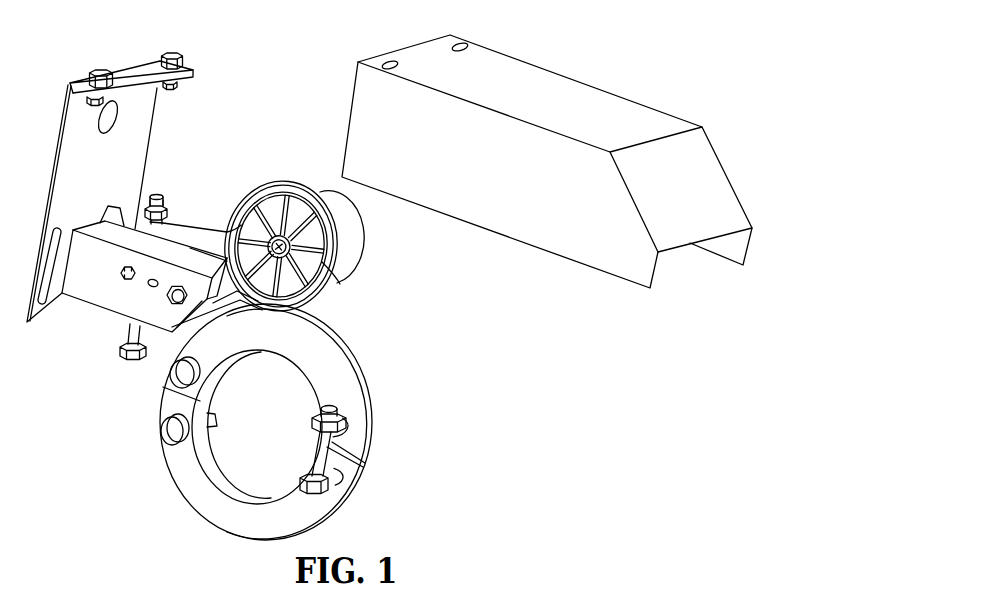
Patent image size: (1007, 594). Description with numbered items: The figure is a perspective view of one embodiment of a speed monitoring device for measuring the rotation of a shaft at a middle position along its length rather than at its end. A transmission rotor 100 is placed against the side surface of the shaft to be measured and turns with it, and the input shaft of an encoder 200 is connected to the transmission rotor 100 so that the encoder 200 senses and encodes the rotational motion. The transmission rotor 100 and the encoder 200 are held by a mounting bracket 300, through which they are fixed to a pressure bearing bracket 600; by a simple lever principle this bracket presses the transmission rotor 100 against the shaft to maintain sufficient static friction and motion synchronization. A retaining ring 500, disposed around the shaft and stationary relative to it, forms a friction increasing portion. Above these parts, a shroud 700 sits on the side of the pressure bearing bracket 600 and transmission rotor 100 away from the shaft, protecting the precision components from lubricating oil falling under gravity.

The transmission rotor 100 is at (318, 258).
The encoder 200 is at (350, 232).
The mounting bracket 300 is at (203, 229).
The retaining ring 500 is at (362, 433).
The pressure bearing bracket 600 is at (95, 280).
The shroud 700 is at (532, 92).